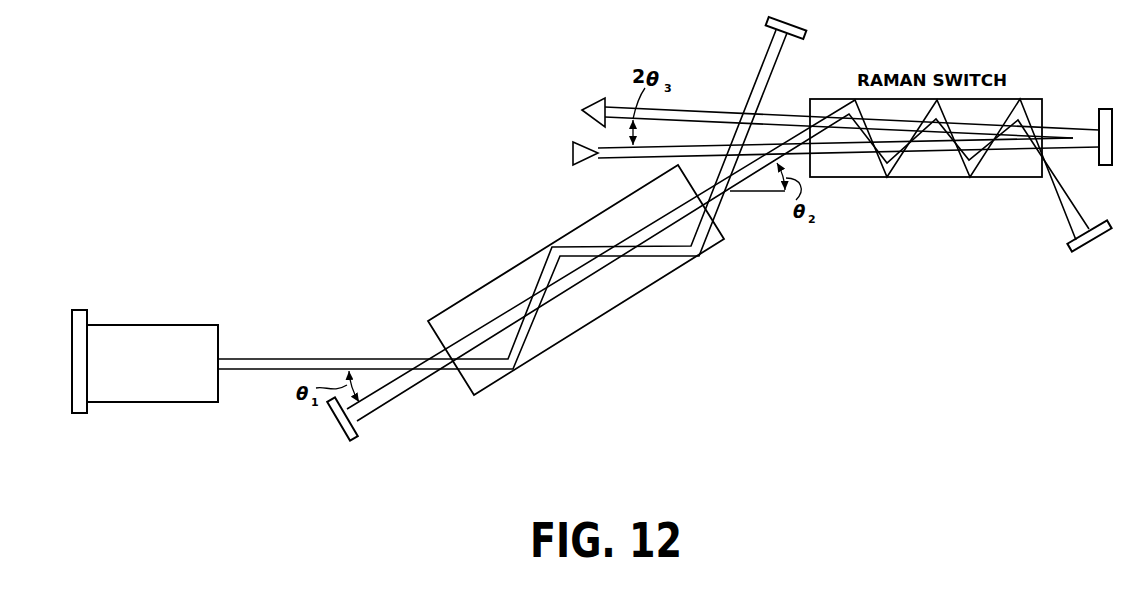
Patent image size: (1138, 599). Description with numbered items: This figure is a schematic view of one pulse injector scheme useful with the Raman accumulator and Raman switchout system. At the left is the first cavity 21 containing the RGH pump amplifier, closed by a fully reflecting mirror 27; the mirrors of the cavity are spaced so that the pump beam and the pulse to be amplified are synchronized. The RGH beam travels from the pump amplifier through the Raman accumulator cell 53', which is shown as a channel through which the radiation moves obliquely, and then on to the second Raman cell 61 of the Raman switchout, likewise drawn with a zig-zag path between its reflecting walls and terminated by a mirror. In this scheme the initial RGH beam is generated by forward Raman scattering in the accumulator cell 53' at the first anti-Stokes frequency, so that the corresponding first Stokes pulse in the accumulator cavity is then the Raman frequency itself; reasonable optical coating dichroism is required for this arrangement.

The first cavity containing an RGH pump amplifier 21 is at (163, 307).
The fully reflecting mirror 27 is at (74, 414).
The Raman accumulator cell 53' is at (601, 280).
The second Raman cell 61 is at (1006, 196).